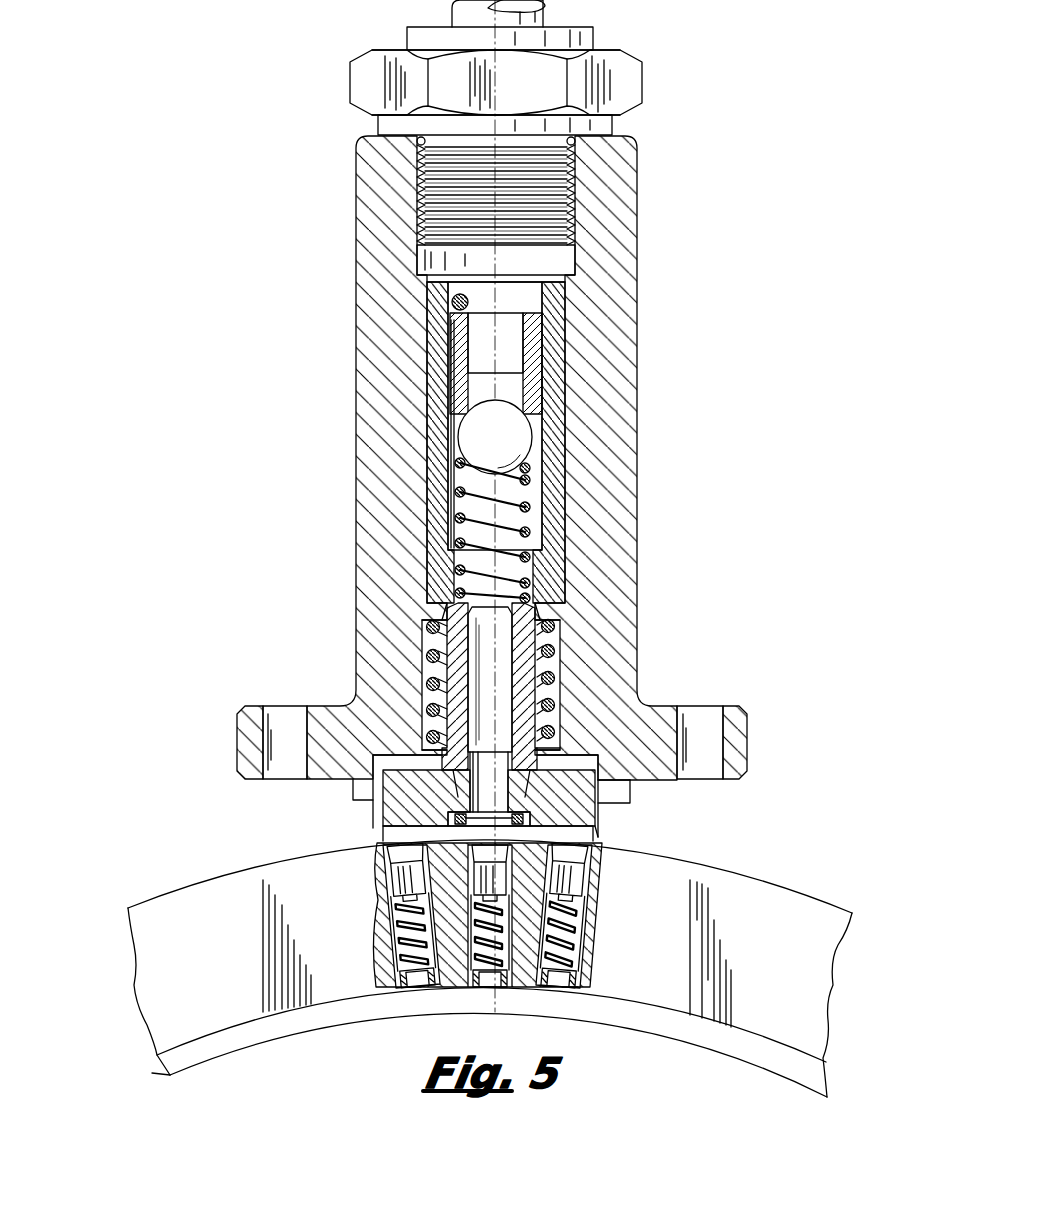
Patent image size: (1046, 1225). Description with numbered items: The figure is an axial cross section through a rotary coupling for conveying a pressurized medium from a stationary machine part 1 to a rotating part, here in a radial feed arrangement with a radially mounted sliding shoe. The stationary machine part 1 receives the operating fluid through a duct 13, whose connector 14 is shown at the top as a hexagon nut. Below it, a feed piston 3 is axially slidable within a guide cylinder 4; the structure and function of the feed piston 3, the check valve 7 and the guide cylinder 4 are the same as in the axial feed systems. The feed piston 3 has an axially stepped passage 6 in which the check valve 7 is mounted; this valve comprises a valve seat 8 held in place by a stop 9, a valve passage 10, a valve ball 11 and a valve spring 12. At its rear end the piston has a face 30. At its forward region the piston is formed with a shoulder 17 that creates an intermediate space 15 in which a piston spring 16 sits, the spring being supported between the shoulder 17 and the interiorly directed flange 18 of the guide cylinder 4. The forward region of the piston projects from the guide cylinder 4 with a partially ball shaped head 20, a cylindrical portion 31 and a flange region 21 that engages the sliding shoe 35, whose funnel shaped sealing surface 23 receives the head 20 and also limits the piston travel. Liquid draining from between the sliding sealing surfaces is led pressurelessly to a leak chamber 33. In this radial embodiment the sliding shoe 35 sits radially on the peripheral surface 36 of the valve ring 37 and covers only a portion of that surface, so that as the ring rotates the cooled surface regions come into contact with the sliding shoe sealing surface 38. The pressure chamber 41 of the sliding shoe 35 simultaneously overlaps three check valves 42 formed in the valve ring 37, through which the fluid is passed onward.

The stationary machine part 1 is at (660, 133).
The feed piston 3 is at (552, 415).
The guide cylinder 4 is at (605, 503).
The axially stepped passage 6 is at (503, 666).
The check valve 7 is at (533, 451).
The valve seat 8 is at (538, 373).
The stop 9 is at (452, 300).
The valve passage 10 is at (507, 325).
The valve ball 11 is at (508, 402).
The valve spring 12 is at (466, 500).
The duct 13 is at (570, 181).
The connector 14 is at (640, 80).
The intermediate space 15 is at (430, 668).
The piston spring 16 is at (428, 628).
The shoulder 17 is at (553, 628).
The interiorly directed flange 18 is at (548, 752).
The head 20 is at (463, 775).
The flange region 21 is at (464, 822).
The sealing surface 23 is at (489, 782).
The face 30 is at (553, 273).
The cylindrical portion 31 is at (540, 801).
The leak chamber 33 is at (348, 706).
The sliding shoe 35 is at (578, 827).
The peripheral surface 36 is at (720, 866).
The valve ring 37 is at (760, 888).
The sliding shoe sealing surface 38 is at (383, 853).
The pressure chamber 41 is at (385, 831).
The check valves 42 is at (412, 984).